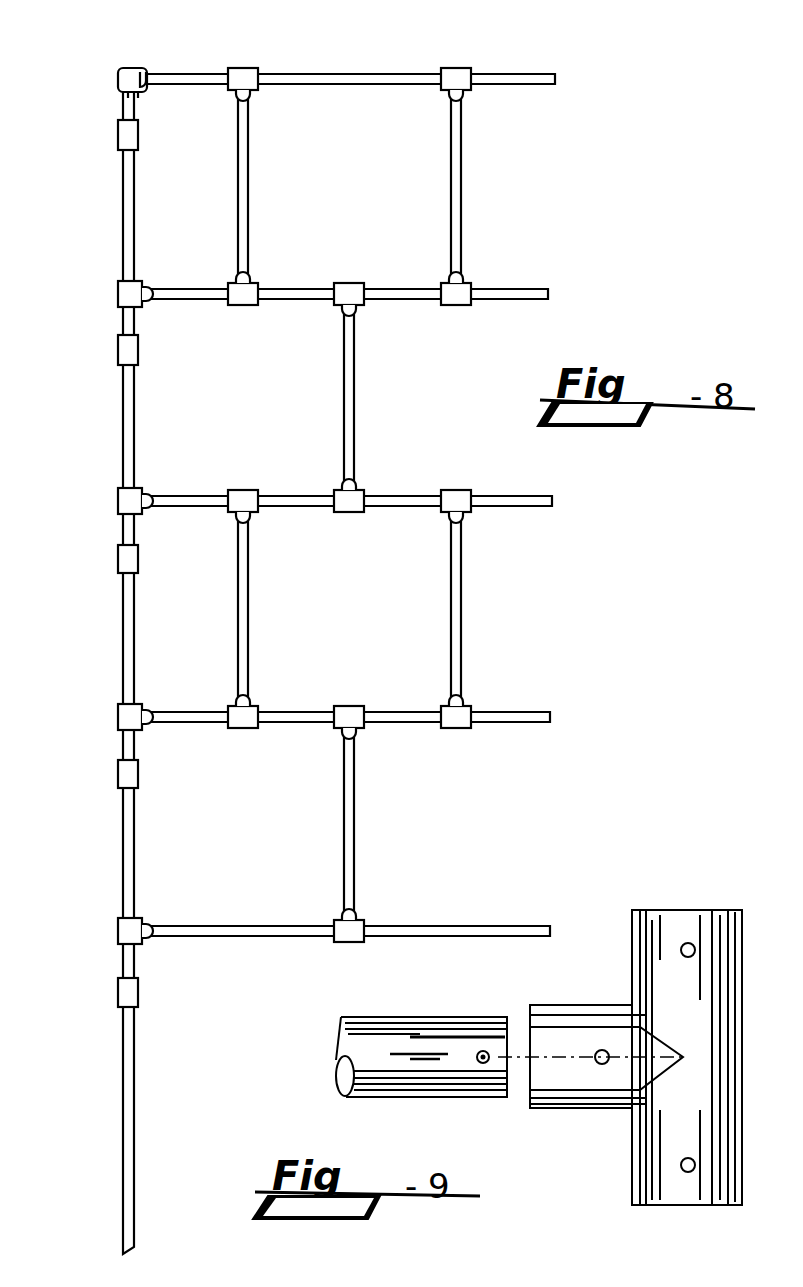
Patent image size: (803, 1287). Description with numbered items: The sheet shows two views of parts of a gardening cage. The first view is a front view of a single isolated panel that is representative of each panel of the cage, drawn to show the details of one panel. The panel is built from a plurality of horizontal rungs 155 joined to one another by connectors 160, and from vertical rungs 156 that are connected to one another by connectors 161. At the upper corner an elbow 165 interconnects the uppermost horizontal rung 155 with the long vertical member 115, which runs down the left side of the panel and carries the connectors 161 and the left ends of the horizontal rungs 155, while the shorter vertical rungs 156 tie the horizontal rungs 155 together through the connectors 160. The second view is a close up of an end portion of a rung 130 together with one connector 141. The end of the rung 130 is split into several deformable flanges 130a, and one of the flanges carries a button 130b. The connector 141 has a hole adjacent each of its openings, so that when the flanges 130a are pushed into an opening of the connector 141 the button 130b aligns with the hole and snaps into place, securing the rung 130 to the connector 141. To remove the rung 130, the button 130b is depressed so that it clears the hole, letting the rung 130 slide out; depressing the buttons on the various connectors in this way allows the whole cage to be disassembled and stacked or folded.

In FIG. 8, the vertical support pipe 115 is at (123, 1068).
In FIG. 8, the horizontal rung 155 is at (351, 505).
In FIG. 8, the vertical rung 156 is at (248, 157).
In FIG. 8, the connector 160 is at (324, 486).
In FIG. 8, the connector 161 is at (131, 564).
In FIG. 8, the elbow 165 is at (130, 68).
In FIG. 9, the rung 130 is at (445, 1049).
In FIG. 9, the deformable flange 130a is at (471, 1059).
In FIG. 9, the button 130b is at (491, 1051).
In FIG. 9, the connector 141 is at (746, 860).